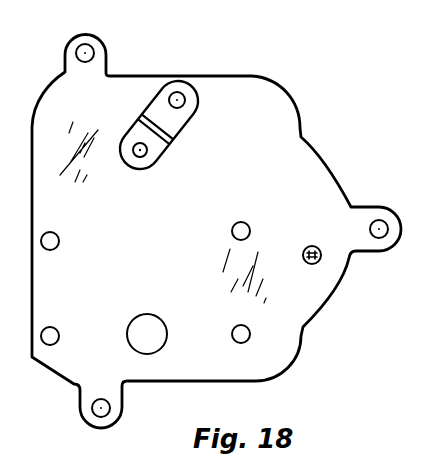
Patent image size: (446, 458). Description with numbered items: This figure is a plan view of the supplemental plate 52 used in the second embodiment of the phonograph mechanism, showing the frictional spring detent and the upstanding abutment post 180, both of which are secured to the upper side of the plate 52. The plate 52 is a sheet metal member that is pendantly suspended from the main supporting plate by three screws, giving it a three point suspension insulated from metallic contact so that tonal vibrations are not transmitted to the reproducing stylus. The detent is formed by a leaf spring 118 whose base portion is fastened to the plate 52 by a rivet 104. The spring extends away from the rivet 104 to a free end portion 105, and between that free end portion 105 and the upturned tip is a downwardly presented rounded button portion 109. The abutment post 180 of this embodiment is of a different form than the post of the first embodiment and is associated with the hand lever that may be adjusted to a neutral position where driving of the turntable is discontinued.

The supplemental plate 52 is at (286, 157).
The rivet 104 is at (177, 92).
The free end portion 105 is at (129, 132).
The leaf spring 118 is at (167, 151).
The rounded button portion 109 is at (139, 155).
The abutment post 180 is at (316, 264).